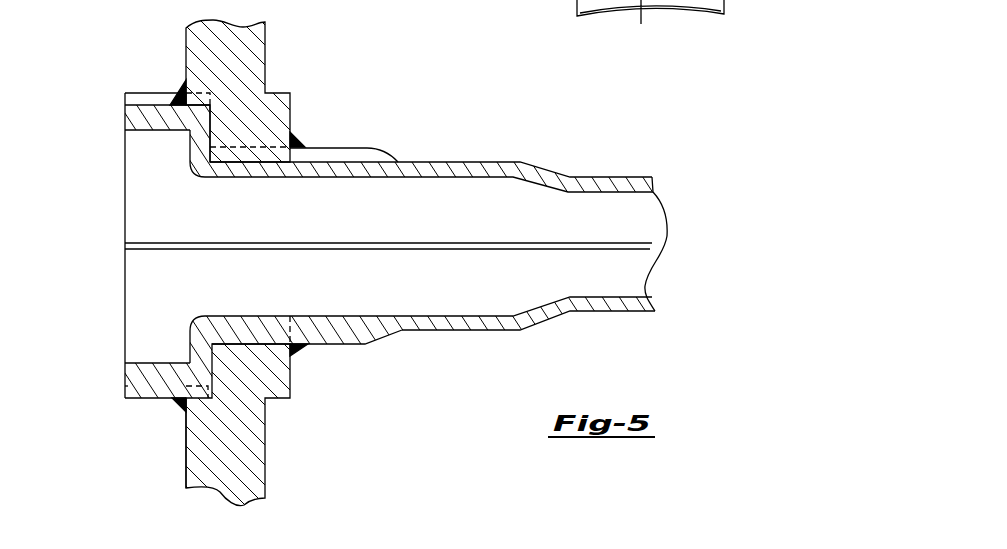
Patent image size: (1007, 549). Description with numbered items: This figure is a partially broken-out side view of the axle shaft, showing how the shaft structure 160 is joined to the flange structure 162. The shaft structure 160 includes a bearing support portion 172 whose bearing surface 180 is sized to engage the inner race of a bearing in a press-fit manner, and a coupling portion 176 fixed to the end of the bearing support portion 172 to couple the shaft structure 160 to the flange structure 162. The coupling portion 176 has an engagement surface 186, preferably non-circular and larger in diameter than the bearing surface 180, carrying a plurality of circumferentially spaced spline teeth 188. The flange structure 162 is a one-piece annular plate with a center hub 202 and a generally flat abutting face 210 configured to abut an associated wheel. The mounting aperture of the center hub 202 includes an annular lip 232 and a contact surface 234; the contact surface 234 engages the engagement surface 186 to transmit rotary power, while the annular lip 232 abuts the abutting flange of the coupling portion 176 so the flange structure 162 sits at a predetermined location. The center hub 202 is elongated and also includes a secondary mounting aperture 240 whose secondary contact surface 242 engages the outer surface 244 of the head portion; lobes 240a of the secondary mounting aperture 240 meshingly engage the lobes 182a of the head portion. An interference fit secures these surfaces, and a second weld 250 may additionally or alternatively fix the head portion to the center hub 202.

The shaft structure 160 is at (631, 136).
The flange structure 162 is at (272, 467).
The bearing support portion 172 is at (456, 328).
The coupling portion 176 is at (166, 118).
The bearing surface 180 is at (478, 158).
The lobes of the head portion 182a is at (136, 97).
The engagement surface 186 is at (281, 346).
The spline teeth 188 is at (248, 171).
The center hub 202 is at (292, 80).
The abutting face 210 is at (186, 478).
The annular lip 232 is at (207, 352).
The contact surface 234 is at (250, 345).
The secondary mounting aperture 240 is at (197, 115).
The lobes of the secondary mounting aperture 240a is at (190, 98).
The secondary contact surface 242 is at (204, 373).
The outer surface of the head portion 244 is at (125, 400).
The second weld 250 is at (300, 132).